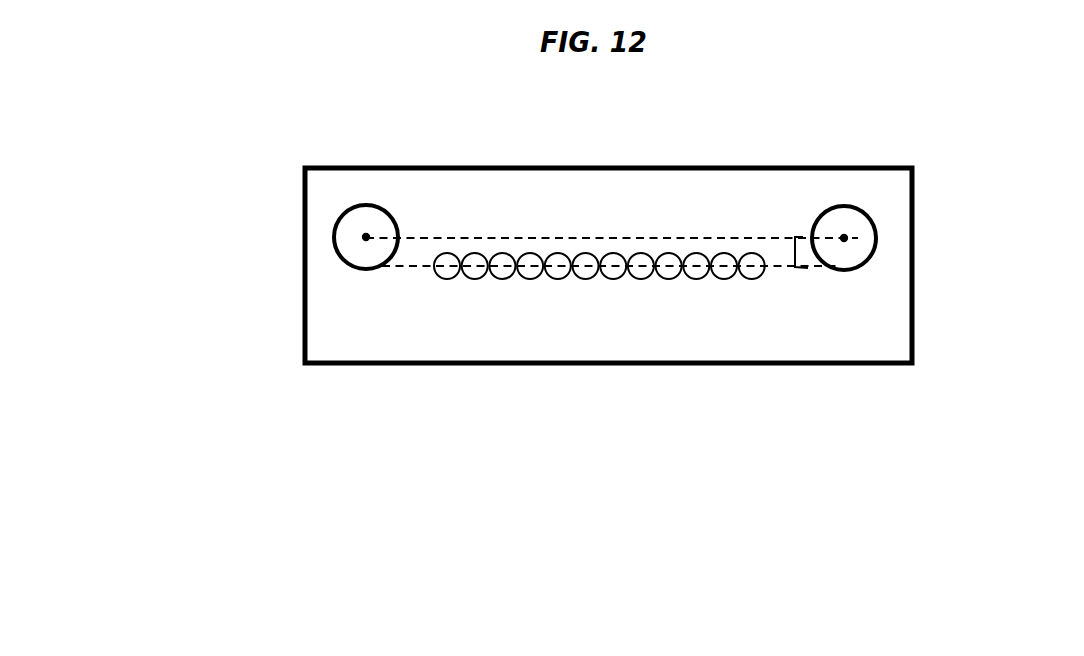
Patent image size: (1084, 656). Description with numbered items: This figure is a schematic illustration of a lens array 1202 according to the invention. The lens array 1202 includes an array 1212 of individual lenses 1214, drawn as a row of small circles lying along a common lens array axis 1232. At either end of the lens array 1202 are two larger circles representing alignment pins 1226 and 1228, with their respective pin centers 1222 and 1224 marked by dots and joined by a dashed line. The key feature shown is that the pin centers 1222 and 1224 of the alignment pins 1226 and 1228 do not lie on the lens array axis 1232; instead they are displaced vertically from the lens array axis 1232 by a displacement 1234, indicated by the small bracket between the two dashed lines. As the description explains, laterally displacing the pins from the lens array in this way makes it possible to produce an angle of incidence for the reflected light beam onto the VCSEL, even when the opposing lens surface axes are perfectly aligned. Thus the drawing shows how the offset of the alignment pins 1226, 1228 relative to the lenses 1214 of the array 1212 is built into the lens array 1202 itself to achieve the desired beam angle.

The lens array 1202 is at (513, 159).
The array of lenses 1212 is at (763, 283).
The lens 1214 is at (480, 253).
The pin center 1222 is at (366, 237).
The pin center 1224 is at (844, 238).
The alignment pin 1226 is at (340, 257).
The alignment pin 1228 is at (877, 246).
The lens array axis 1232 is at (398, 262).
The displacement 1234 is at (790, 253).